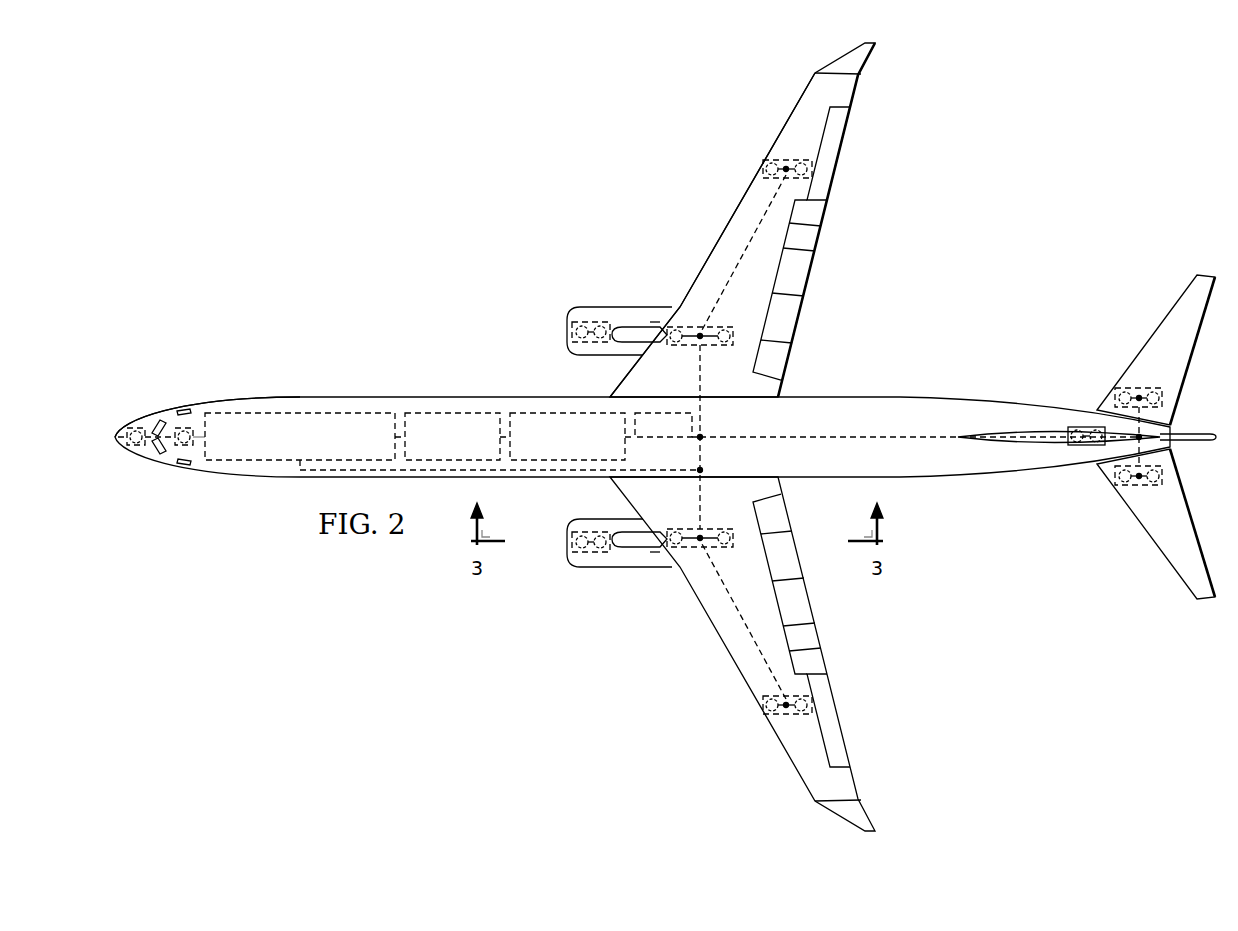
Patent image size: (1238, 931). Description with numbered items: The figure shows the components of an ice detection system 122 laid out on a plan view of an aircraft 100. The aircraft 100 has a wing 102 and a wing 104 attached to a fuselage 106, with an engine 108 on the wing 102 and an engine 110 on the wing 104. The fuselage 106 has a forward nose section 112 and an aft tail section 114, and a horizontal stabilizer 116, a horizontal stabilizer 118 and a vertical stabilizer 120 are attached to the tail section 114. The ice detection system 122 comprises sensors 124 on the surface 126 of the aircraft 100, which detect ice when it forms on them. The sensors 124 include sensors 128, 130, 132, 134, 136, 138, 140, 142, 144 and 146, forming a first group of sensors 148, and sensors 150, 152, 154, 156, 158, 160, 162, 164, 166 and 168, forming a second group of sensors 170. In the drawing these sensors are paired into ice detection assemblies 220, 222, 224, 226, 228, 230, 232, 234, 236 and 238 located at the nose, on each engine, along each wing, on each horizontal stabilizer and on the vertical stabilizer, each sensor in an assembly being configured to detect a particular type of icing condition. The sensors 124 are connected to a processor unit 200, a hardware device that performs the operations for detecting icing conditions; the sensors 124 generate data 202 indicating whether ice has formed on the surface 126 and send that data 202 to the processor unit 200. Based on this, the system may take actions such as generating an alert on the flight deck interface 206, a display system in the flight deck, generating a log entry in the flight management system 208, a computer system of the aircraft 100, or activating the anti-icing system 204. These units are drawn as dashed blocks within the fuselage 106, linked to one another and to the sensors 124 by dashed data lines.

The aircraft 100 is at (392, 264).
The wing 102 is at (713, 240).
The wing 104 is at (712, 640).
The fuselage 106 is at (370, 397).
The engine 108 is at (638, 307).
The engine 110 is at (650, 567).
The nose section 112 is at (108, 437).
The tail section 114 is at (1066, 547).
The horizontal stabilizer 116 is at (1163, 315).
The horizontal stabilizer 118 is at (1163, 560).
The vertical stabilizer 120 is at (1200, 432).
The ice detection system 122 is at (860, 289).
The sensors 124 is at (790, 624).
The surface 126 is at (897, 400).
The sensor 128 is at (132, 425).
The sensor 130 is at (583, 325).
The sensor 132 is at (572, 543).
The sensor 134 is at (778, 160).
The sensor 136 is at (677, 344).
The sensor 138 is at (676, 527).
The sensor 140 is at (776, 715).
The sensor 142 is at (1128, 386).
The sensor 144 is at (1130, 488).
The sensor 146 is at (1082, 426).
The first group of sensors 148 is at (684, 132).
The sensor 150 is at (166, 420).
The sensor 152 is at (600, 343).
The sensor 154 is at (600, 553).
The sensor 156 is at (815, 170).
The sensor 158 is at (730, 327).
The sensor 160 is at (728, 547).
The sensor 162 is at (815, 705).
The sensor 164 is at (1163, 396).
The sensor 166 is at (1163, 480).
The sensor 168 is at (1098, 446).
The second group of sensors 170 is at (880, 134).
The processor unit 200 is at (545, 413).
The data 202 is at (694, 426).
The anti-icing system 204 is at (450, 413).
The flight deck interface 206 is at (168, 455).
The flight management system 208 is at (310, 413).
The ice detection assembly 220 is at (130, 448).
The ice detection assembly 222 is at (572, 330).
The ice detection assembly 224 is at (583, 555).
The ice detection assembly 226 is at (763, 172).
The ice detection assembly 228 is at (722, 345).
The ice detection assembly 230 is at (708, 527).
The ice detection assembly 232 is at (763, 704).
The ice detection assembly 234 is at (1143, 386).
The ice detection assembly 236 is at (1145, 487).
The ice detection assembly 238 is at (1068, 432).